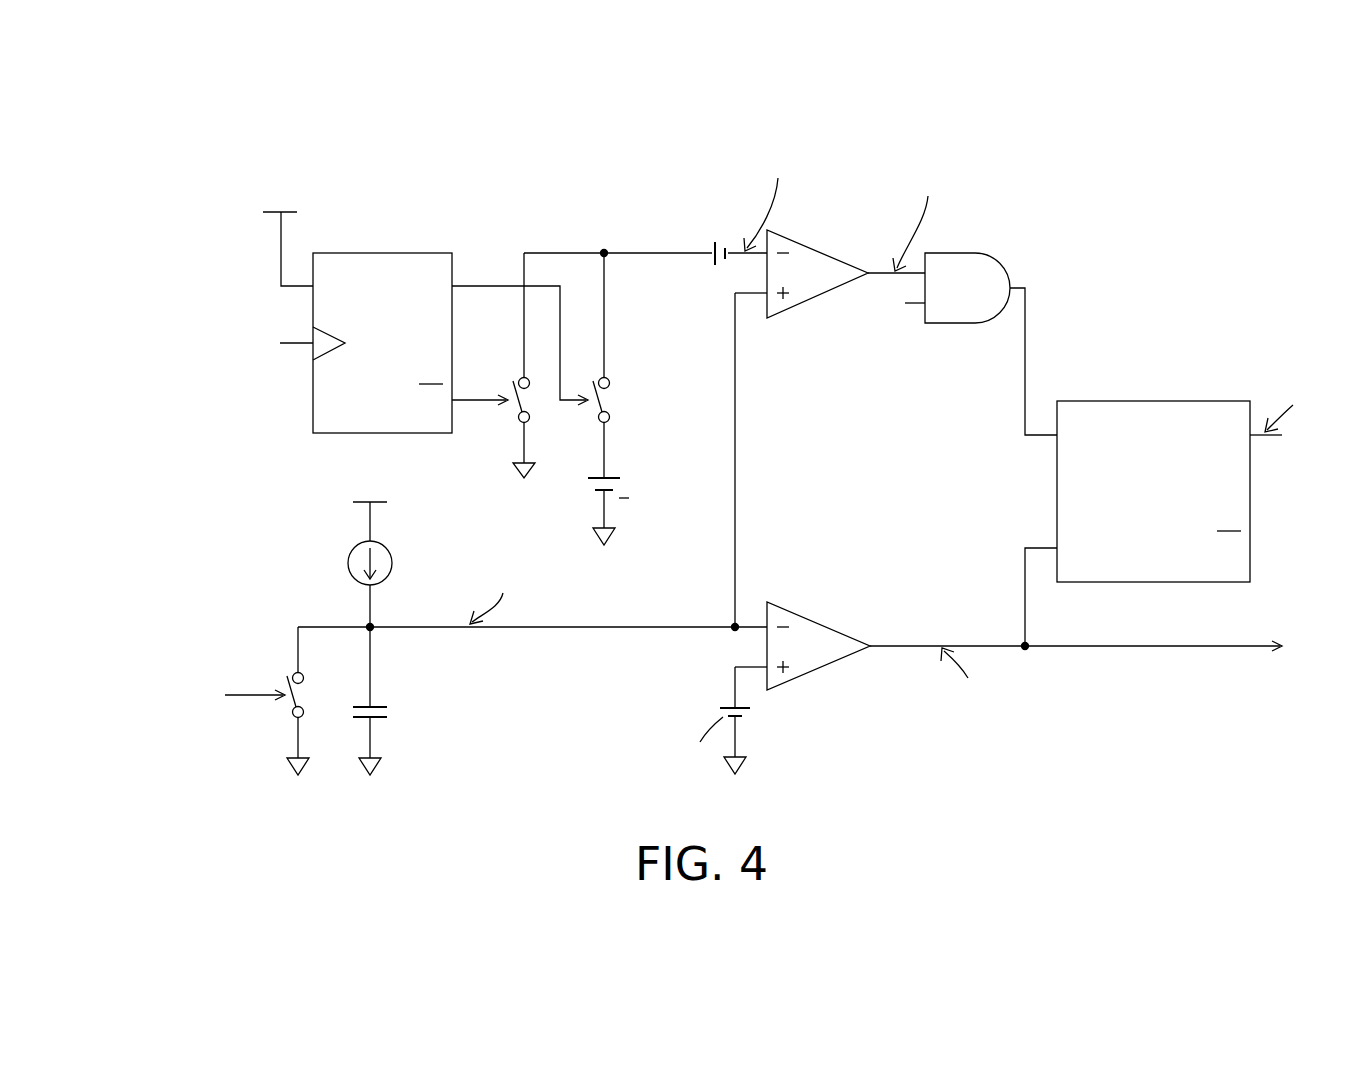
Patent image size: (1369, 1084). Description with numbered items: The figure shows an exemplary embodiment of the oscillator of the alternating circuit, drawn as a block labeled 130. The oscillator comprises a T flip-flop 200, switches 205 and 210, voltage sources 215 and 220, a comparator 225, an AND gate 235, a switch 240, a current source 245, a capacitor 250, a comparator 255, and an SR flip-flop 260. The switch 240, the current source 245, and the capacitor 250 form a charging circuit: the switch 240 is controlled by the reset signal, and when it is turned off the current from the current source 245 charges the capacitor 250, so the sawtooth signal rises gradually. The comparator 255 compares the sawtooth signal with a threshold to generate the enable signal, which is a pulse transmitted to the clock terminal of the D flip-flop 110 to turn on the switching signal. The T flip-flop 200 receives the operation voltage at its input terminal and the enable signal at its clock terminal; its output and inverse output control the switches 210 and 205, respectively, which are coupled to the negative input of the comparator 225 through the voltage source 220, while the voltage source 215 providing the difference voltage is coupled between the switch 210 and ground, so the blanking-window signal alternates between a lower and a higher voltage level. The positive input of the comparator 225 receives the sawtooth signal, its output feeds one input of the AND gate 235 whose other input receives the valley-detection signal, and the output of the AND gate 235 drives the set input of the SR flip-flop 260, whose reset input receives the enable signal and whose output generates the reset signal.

The timing control circuit 130 is at (1295, 164).
The T flip-flop 200 is at (319, 253).
The switch 205 is at (515, 412).
The switch 210 is at (595, 412).
The voltage source 215 is at (590, 487).
The voltage source 220 is at (724, 243).
The comparator 225 is at (822, 248).
The AND gate 235 is at (953, 256).
The switch 240 is at (286, 707).
The current source 245 is at (346, 565).
The capacitor 250 is at (390, 713).
The comparator 255 is at (820, 624).
The SR flip-flop 260 is at (1060, 400).
The D flip-flop 110 is at (1099, 646).